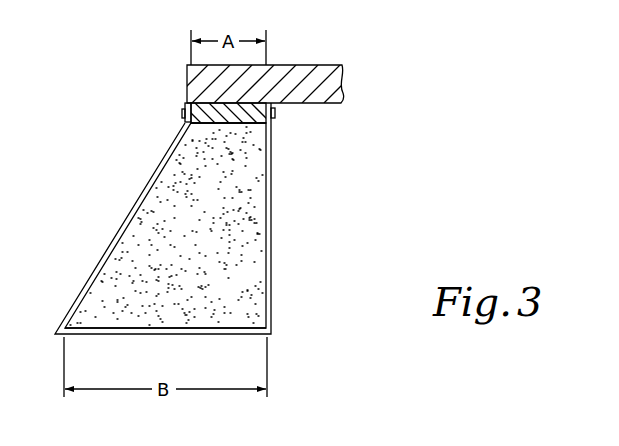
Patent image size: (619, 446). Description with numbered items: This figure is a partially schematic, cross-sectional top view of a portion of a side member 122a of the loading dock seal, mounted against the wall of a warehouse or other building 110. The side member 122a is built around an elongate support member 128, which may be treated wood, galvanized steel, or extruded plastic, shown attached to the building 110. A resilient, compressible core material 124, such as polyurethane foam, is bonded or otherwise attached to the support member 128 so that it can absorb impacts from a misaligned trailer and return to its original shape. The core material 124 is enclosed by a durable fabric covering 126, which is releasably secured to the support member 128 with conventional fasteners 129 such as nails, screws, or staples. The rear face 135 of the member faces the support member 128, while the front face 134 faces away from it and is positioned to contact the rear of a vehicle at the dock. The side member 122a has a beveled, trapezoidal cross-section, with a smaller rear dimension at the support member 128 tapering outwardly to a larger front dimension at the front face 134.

The building 110 is at (310, 72).
The support member 128 is at (213, 110).
The fasteners 129 is at (183, 113).
The compressible core material 124 is at (228, 235).
The covering 126 is at (271, 278).
The rear face 135 is at (240, 123).
The front face 134 is at (172, 331).
The side member 122a is at (286, 338).